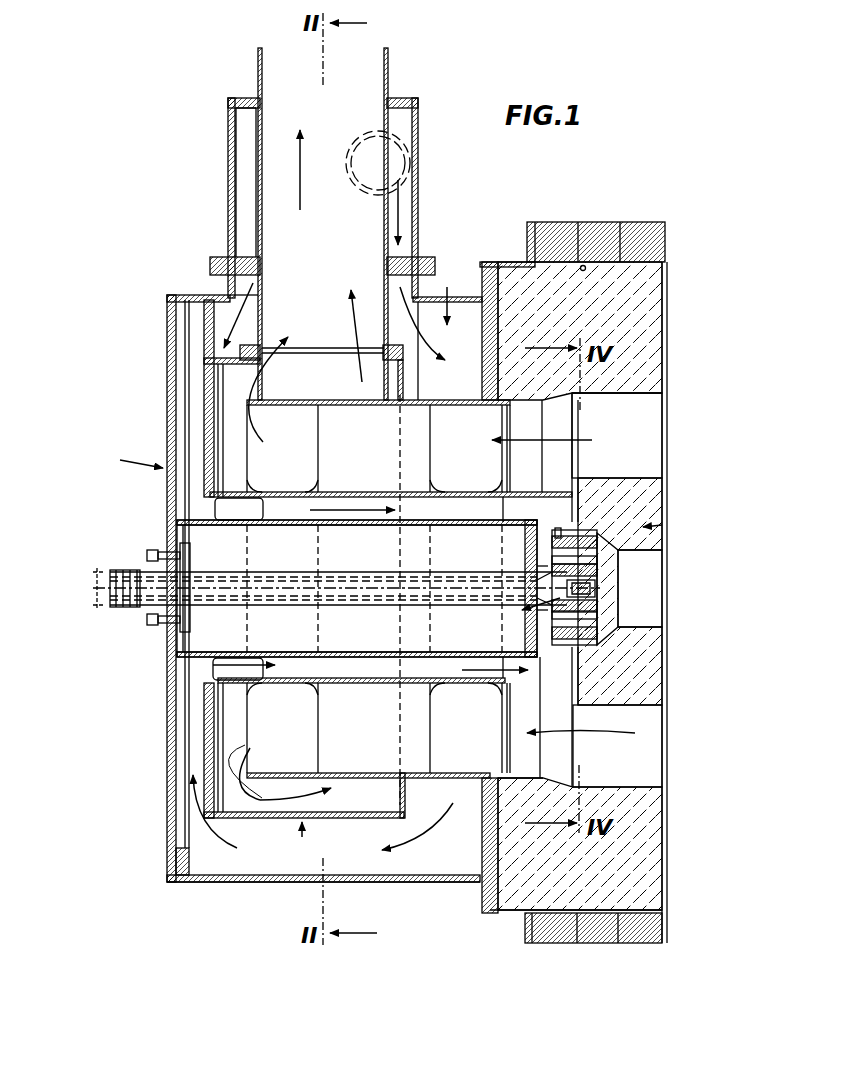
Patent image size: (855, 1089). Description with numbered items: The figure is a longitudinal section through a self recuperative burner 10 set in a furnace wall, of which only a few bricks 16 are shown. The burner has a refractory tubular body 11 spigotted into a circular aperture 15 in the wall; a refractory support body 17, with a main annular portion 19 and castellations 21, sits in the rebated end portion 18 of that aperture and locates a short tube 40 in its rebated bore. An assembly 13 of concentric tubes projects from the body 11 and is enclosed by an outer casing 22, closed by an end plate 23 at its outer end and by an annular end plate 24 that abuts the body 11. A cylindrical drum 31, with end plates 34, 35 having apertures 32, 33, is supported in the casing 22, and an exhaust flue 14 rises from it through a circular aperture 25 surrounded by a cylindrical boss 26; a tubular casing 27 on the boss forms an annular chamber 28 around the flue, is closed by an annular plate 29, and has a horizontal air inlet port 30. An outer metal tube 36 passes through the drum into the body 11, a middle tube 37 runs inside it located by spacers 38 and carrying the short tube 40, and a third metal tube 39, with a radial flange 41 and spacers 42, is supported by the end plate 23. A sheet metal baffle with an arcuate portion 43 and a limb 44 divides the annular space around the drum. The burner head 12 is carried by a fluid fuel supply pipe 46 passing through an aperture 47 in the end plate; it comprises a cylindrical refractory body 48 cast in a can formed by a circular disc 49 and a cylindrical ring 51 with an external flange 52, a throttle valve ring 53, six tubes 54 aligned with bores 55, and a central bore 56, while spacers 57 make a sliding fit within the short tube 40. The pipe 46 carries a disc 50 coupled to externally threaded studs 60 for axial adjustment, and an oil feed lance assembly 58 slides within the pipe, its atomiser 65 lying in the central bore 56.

The burner 10 is at (395, 605).
The tubular body 11 is at (545, 280).
The burner head 12 is at (605, 577).
The assembly of concentric tubes 13 is at (443, 332).
The exhaust flue 14 is at (388, 76).
The circular aperture 15 is at (600, 240).
The bricks 16 is at (640, 238).
The support body 17 is at (592, 711).
The rebated end portion 18 is at (645, 392).
The main annular portion 19 is at (632, 500).
The castellations 21 is at (620, 427).
The outer casing 22 is at (387, 883).
The end plate 23 is at (167, 752).
The annular end plate 24 is at (482, 896).
The circular aperture 25 is at (240, 286).
The cylindrical boss 26 is at (236, 280).
The tubular casing 27 is at (228, 202).
The annular chamber 28 is at (246, 160).
The annular plate 29 is at (240, 98).
The air inlet port 30 is at (410, 150).
The cylindrical drum 31 is at (299, 855).
The circular aperture 32 is at (210, 512).
The circular aperture 33 is at (400, 780).
The end plate 34 is at (220, 805).
The end plate 35 is at (405, 805).
The outer metal tube 36 is at (413, 400).
The middle tube 37 is at (370, 492).
The spacers 38 is at (300, 460).
The third metal tube 39 is at (278, 655).
The short tube 40 is at (574, 530).
The radial flange 41 is at (528, 545).
The spacers 42 is at (465, 492).
The arcuate baffle portion 43 is at (185, 342).
The baffle limb 44 is at (342, 578).
The fluid fuel supply pipe 46 is at (382, 606).
The aperture 47 is at (165, 566).
The cylindrical refractory body 48 is at (597, 608).
The circular disc 49 is at (552, 630).
The disc 50 is at (190, 566).
The cylindrical ring 51 is at (620, 660).
The external flange 52 is at (552, 640).
The throttle valve ring 53 is at (560, 648).
The tubes 54 is at (530, 560).
The bores 55 is at (595, 555).
The central bore 56 is at (597, 602).
The spacers 57 is at (598, 655).
The oil feed lance assembly 58 is at (547, 608).
The externally threaded studs 60 is at (147, 552).
The atomiser 65 is at (596, 588).